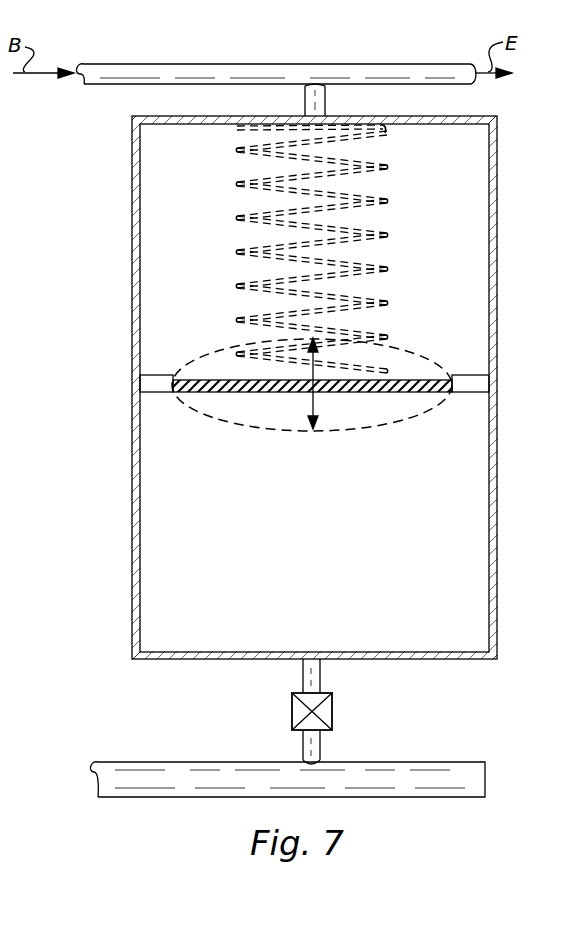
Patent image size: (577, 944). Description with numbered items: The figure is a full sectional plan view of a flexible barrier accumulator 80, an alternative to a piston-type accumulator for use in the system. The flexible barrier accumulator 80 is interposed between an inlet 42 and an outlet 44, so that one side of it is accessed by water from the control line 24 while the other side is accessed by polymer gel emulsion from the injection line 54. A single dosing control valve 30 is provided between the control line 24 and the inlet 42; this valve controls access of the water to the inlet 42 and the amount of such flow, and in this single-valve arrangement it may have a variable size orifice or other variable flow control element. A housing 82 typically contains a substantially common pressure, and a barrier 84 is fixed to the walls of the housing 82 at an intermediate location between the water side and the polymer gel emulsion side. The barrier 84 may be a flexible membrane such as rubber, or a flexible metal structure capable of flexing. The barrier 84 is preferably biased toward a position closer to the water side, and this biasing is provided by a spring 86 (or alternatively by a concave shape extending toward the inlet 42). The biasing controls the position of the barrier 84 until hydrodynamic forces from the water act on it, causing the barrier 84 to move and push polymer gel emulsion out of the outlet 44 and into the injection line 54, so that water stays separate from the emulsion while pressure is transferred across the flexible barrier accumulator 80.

The injection line 54 is at (195, 76).
The outlet 44 is at (313, 97).
The flexible barrier accumulator 80 is at (298, 387).
The housing 82 is at (497, 472).
The spring 86 is at (388, 270).
The barrier 84 is at (240, 384).
The inlet 42 is at (313, 673).
The dosing control valve 30 is at (292, 710).
The control line 24 is at (128, 767).